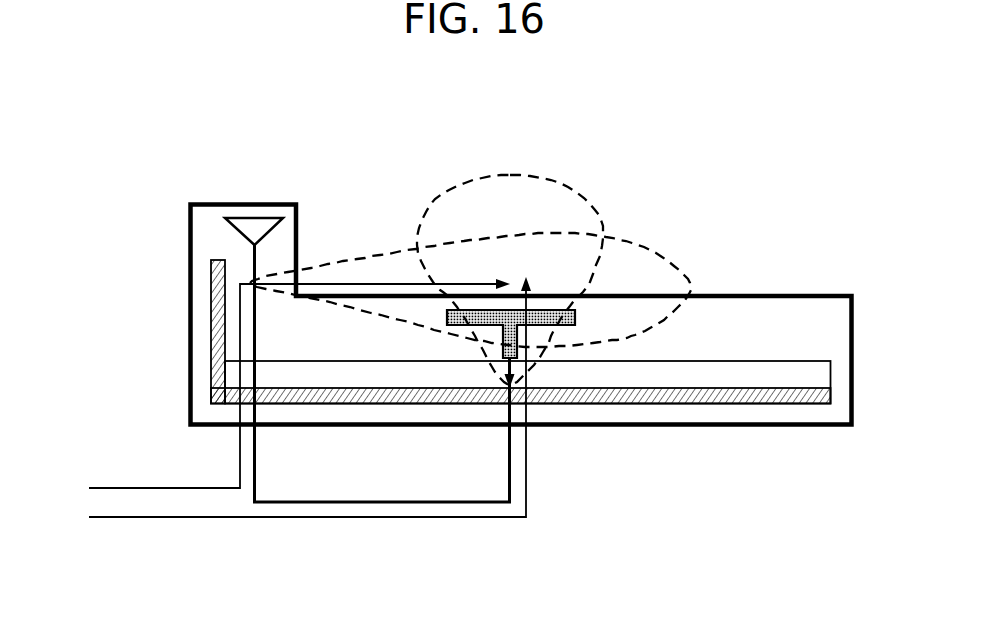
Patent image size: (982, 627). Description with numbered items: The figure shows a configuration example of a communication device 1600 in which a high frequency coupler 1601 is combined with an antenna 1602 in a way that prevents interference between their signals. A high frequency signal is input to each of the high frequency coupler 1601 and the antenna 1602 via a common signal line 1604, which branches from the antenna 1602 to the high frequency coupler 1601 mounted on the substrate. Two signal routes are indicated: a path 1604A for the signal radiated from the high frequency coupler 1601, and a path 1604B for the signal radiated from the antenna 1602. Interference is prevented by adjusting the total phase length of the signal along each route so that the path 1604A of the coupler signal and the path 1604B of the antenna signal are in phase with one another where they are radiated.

The communication device 1600 is at (458, 160).
The high frequency coupler 1601 is at (548, 310).
The antenna 1602 is at (245, 218).
The signal line 1604 is at (380, 480).
The path of a signal radiated from the high frequency coupler 1604A is at (527, 467).
The path of a signal radiated from the antenna 1604B is at (240, 462).